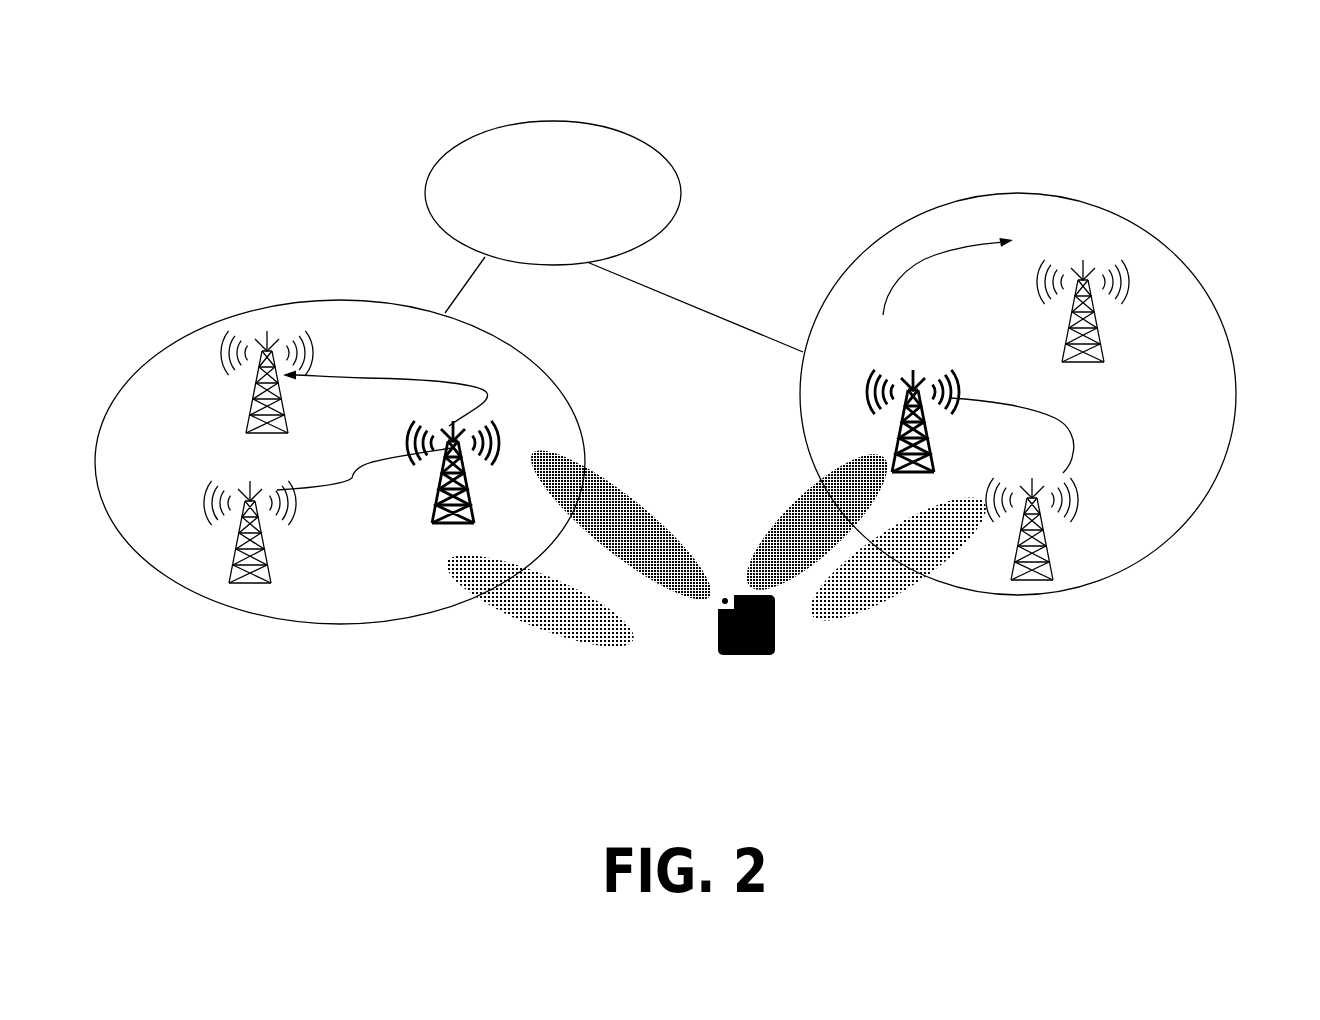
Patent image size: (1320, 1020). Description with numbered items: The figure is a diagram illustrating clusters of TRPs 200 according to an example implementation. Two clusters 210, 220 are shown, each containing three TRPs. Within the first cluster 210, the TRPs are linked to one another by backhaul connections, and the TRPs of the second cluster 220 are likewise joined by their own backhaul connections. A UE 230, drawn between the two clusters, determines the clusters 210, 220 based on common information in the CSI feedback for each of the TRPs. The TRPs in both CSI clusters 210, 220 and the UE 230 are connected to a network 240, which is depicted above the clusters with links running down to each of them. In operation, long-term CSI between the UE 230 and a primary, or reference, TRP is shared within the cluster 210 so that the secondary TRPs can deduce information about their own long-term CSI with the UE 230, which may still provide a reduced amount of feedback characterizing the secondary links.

The clusters of TRPs 200 is at (1246, 96).
The cluster 210 is at (221, 306).
The cluster 220 is at (916, 203).
The UE 230 is at (742, 666).
The network 240 is at (622, 206).